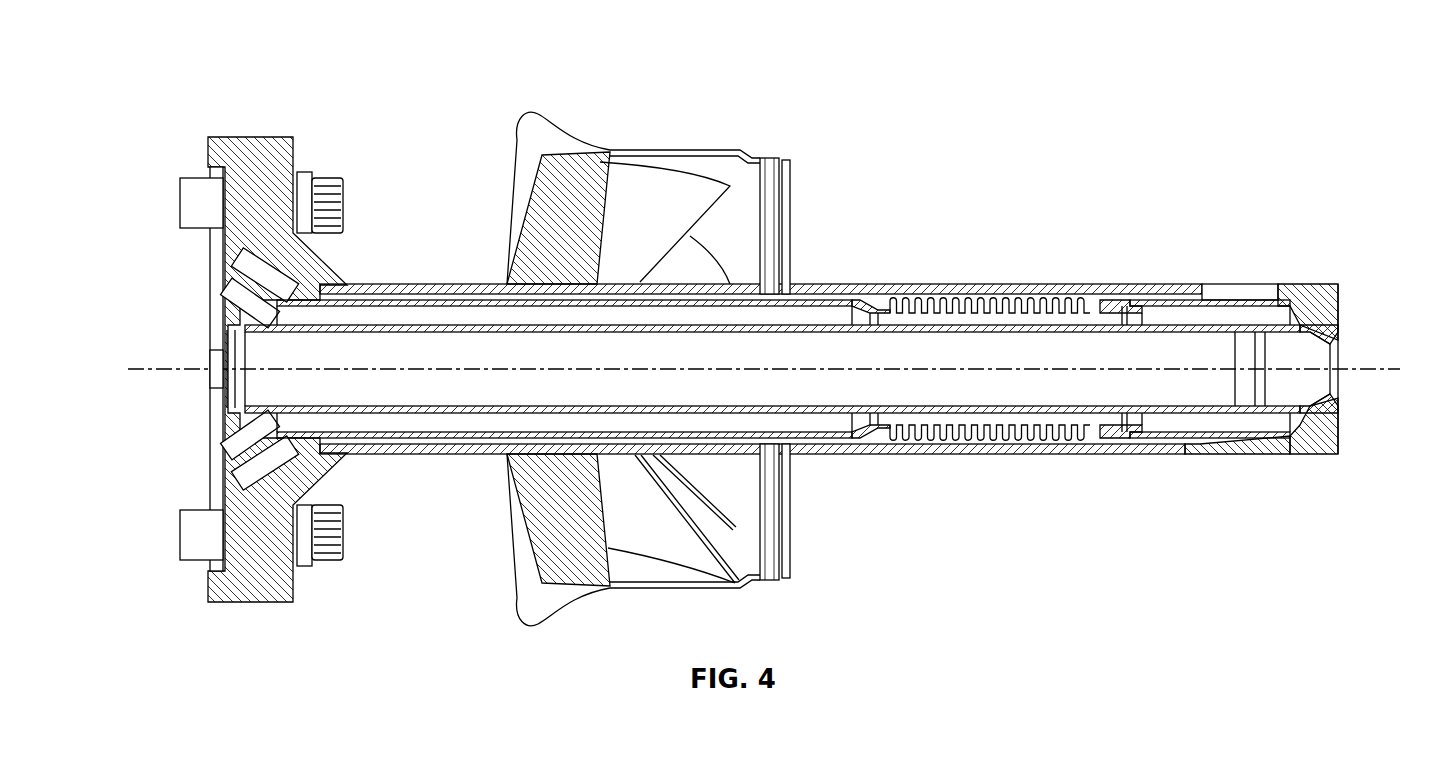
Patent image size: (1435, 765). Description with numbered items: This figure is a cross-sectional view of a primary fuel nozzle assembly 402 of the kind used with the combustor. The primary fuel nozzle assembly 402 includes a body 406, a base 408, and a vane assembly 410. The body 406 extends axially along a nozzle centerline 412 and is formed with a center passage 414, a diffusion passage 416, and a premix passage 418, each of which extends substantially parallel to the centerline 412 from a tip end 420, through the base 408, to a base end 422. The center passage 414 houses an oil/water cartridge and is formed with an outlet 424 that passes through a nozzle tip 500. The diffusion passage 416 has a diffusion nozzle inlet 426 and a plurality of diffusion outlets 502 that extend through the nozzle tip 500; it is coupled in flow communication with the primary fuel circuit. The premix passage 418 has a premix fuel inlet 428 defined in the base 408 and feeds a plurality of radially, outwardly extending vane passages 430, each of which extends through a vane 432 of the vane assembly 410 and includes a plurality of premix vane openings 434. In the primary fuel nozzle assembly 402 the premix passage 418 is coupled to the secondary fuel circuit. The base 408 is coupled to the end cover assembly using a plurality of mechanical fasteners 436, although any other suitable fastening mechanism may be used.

The primary fuel nozzle assembly 402 is at (183, 114).
The body 406 is at (392, 283).
The base 408 is at (252, 152).
The vane assembly 410 is at (616, 128).
The nozzle centerline 412 is at (147, 366).
The center passage 414 is at (1050, 398).
The diffusion passage 416 is at (815, 425).
The premix passage 418 is at (410, 440).
The tip end 420 is at (1328, 275).
The base end 422 is at (200, 275).
The outlet 424 is at (1328, 352).
The diffusion nozzle inlet 426 is at (232, 437).
The premix fuel inlet 428 is at (228, 485).
The vane passages 430 is at (770, 542).
The vane 432 is at (775, 168).
The premix vane openings 434 is at (790, 205).
The mechanical fasteners 436 is at (335, 553).
The nozzle tip 500 is at (1255, 455).
The diffusion outlets 502 is at (1308, 455).